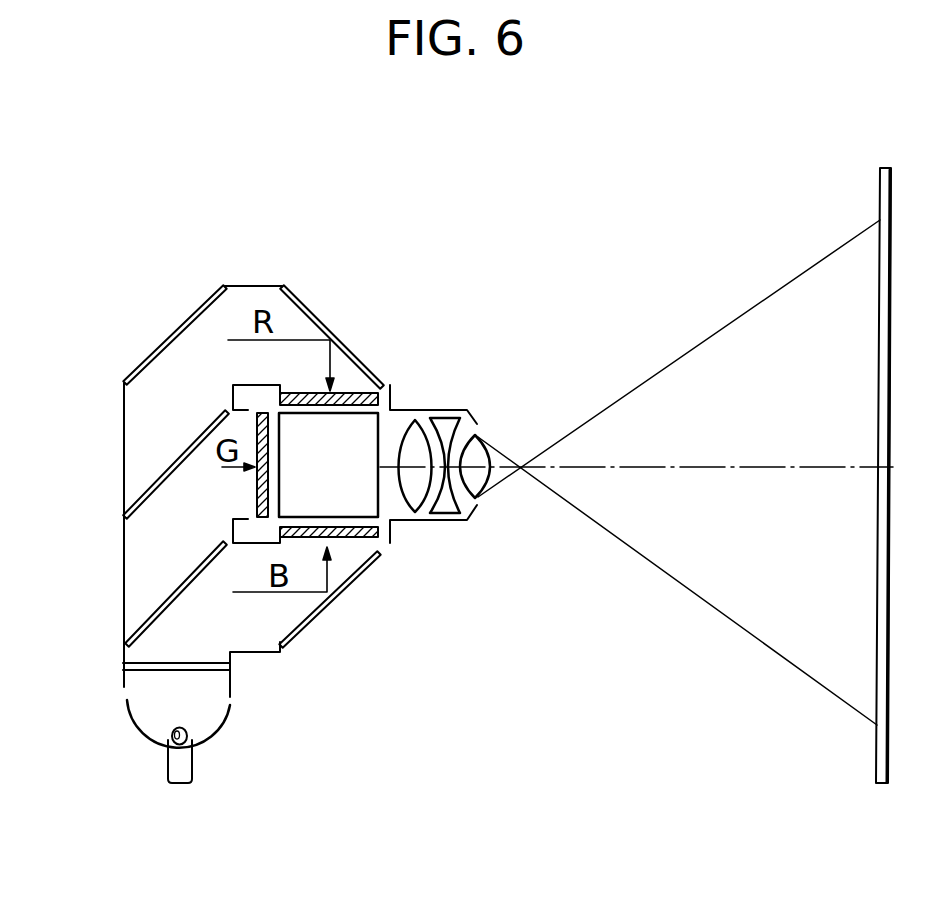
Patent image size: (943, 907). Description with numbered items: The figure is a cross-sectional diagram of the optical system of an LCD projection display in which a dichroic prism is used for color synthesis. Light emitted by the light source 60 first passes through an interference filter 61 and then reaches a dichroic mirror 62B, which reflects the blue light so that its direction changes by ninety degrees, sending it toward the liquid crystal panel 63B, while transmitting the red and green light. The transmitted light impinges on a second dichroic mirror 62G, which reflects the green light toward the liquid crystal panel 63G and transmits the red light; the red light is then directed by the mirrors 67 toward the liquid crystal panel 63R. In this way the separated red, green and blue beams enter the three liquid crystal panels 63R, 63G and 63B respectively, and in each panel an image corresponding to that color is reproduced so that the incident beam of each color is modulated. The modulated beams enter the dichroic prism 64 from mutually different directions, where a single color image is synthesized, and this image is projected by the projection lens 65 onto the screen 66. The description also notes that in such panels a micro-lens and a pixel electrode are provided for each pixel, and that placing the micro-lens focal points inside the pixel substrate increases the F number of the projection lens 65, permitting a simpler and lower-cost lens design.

The light source 60 is at (188, 732).
The interference filter 61 is at (200, 672).
The second dichroic mirror 62G is at (153, 477).
The dichroic mirror 62B is at (153, 625).
The liquid crystal panel 63R is at (357, 395).
The liquid crystal panel 63G is at (257, 487).
The liquid crystal panel 63B is at (353, 538).
The dichroic prism 64 is at (368, 493).
The projection lens 65 is at (448, 508).
The screen 66 is at (880, 203).
The mirrors 67 is at (282, 287).